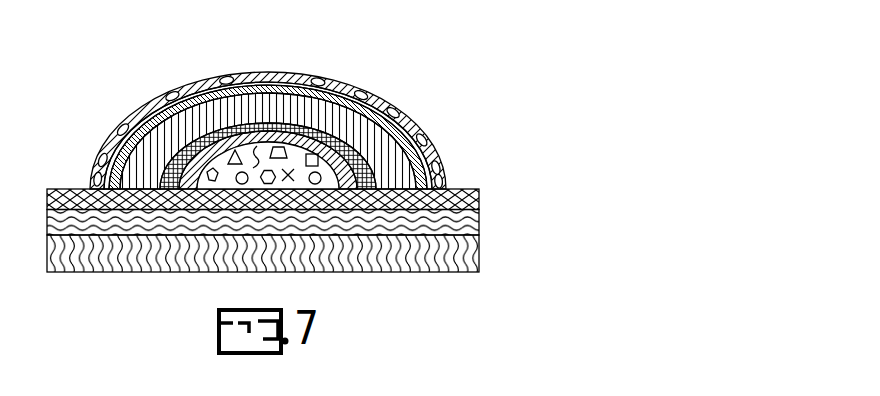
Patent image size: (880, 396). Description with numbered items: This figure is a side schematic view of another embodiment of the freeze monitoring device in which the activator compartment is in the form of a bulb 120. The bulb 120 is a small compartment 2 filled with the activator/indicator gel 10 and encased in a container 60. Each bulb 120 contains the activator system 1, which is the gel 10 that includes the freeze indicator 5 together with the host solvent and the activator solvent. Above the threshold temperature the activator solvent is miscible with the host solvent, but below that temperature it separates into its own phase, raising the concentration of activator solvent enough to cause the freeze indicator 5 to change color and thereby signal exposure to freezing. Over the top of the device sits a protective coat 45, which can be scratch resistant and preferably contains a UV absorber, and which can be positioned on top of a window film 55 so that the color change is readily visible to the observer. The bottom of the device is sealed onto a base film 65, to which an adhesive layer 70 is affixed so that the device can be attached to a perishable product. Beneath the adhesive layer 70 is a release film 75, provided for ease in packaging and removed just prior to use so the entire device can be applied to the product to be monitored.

The activator system 1 is at (220, 163).
The compartment 2 is at (268, 142).
The freeze indicator 5 is at (312, 158).
The gel 10 is at (163, 104).
The protective coat 45 is at (407, 126).
The window film 55 is at (412, 126).
The container 60 is at (393, 168).
The base film 65 is at (481, 199).
The adhesive layer 70 is at (480, 223).
The release film 75 is at (480, 260).
The bulb 120 is at (321, 82).